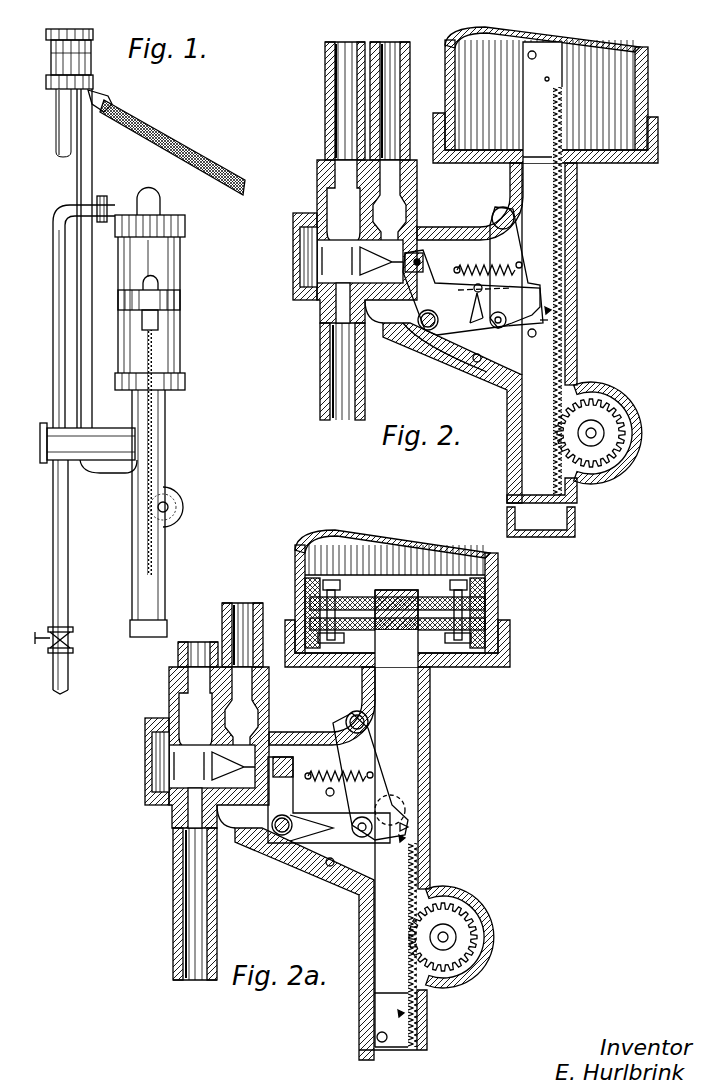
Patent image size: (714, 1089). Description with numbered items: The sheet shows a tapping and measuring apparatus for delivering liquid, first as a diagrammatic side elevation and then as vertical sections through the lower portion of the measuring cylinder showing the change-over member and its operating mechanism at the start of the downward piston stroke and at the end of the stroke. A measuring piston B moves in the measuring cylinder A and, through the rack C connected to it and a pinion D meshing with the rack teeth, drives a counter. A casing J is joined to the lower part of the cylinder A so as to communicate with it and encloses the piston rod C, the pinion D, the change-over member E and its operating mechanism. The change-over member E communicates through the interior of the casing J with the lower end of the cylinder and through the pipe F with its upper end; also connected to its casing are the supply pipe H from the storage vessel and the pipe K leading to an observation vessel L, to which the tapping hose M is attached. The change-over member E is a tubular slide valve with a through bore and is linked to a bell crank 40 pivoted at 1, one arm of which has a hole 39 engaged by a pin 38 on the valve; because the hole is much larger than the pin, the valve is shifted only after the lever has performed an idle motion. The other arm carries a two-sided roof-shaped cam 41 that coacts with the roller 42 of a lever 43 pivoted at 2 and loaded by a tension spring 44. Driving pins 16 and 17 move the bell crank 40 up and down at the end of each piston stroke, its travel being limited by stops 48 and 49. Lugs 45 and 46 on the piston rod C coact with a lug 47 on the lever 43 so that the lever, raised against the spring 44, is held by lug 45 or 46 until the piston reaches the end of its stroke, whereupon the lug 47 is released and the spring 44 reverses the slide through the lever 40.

In FIG. 1, the measuring cylinder A is at (175, 271).
In FIG. 2, the measuring cylinder A is at (630, 80).
In FIG. 2A, the measuring cylinder A is at (498, 590).
In FIG. 1, the measuring piston B is at (178, 306).
In FIG. 2A, the measuring piston B is at (423, 583).
In FIG. 1, the rack C is at (152, 365).
In FIG. 2, the rack C is at (548, 137).
In FIG. 2A, the rack C is at (400, 728).
In FIG. 1, the pinion D is at (170, 512).
In FIG. 2, the pinion D is at (598, 458).
In FIG. 2A, the pinion D is at (460, 950).
In FIG. 2, the change-over member E is at (360, 248).
In FIG. 2A, the change-over member E is at (212, 753).
In FIG. 1, the pipe F is at (60, 305).
In FIG. 2, the pipe F is at (335, 93).
In FIG. 2A, the pipe F is at (190, 657).
In FIG. 1, the supply pipe H is at (55, 505).
In FIG. 2, the supply pipe H is at (340, 390).
In FIG. 2A, the supply pipe H is at (195, 905).
In FIG. 1, the casing J is at (118, 466).
In FIG. 2, the casing J is at (579, 268).
In FIG. 2A, the casing J is at (272, 855).
In FIG. 1, the pipe K is at (77, 185).
In FIG. 2, the pipe K is at (385, 56).
In FIG. 2A, the pipe K is at (238, 612).
In FIG. 1, the observation vessel L is at (77, 57).
In FIG. 1, the tapping hose M is at (153, 122).
In FIG. 2, the pivot 1 is at (420, 335).
In FIG. 2, the pivot 2 is at (498, 203).
In FIG. 2, the driving pin 16 is at (530, 50).
In FIG. 2A, the driving pin 16 is at (405, 808).
In FIG. 2, the driving pin 17 is at (532, 337).
In FIG. 2A, the driving pin 17 is at (377, 1037).
In FIG. 2, the pin 38 is at (421, 258).
In FIG. 2, the hole 39 is at (413, 258).
In FIG. 2, the bell crank 40 is at (418, 344).
In FIG. 2, the two-sided roof-shaped cam 41 is at (448, 326).
In FIG. 2, the roller 42 is at (493, 332).
In FIG. 2A, the roller 42 is at (362, 838).
In FIG. 2, the lever 43 is at (508, 238).
In FIG. 2A, the lever 43 is at (357, 742).
In FIG. 2, the tension spring 44 is at (484, 260).
In FIG. 2, the lug 45 is at (546, 81).
In FIG. 2A, the lug 45 is at (405, 838).
In FIG. 2, the lug 46 is at (551, 310).
In FIG. 2A, the lug 46 is at (404, 1013).
In FIG. 2, the lug 47 is at (545, 323).
In FIG. 2A, the lug 47 is at (408, 827).
In FIG. 2, the stop 48 is at (474, 289).
In FIG. 2A, the stop 48 is at (328, 794).
In FIG. 2, the stop 49 is at (475, 362).
In FIG. 2A, the stop 49 is at (328, 866).